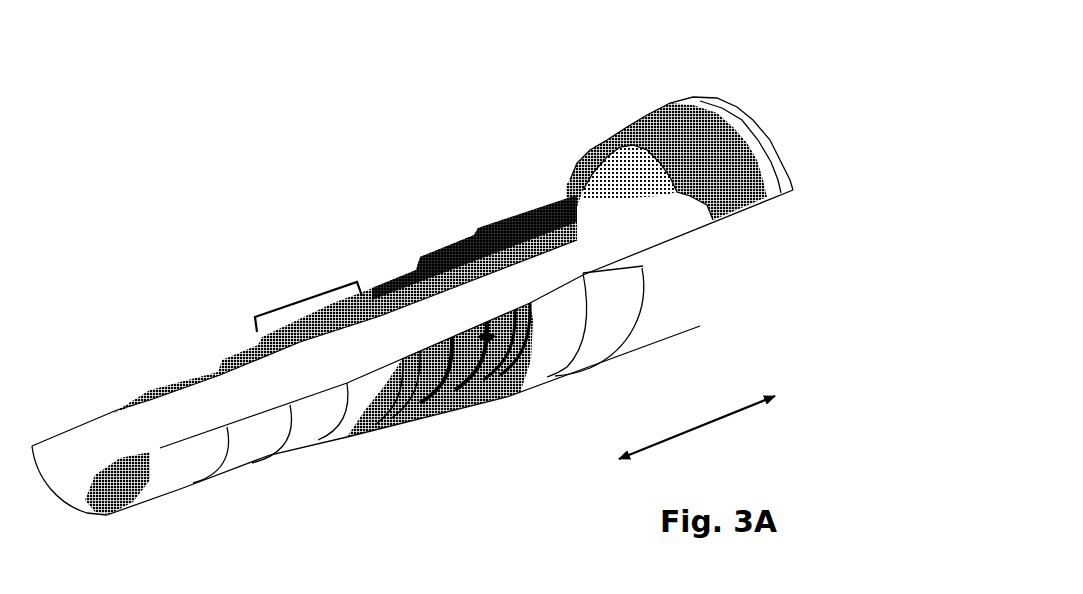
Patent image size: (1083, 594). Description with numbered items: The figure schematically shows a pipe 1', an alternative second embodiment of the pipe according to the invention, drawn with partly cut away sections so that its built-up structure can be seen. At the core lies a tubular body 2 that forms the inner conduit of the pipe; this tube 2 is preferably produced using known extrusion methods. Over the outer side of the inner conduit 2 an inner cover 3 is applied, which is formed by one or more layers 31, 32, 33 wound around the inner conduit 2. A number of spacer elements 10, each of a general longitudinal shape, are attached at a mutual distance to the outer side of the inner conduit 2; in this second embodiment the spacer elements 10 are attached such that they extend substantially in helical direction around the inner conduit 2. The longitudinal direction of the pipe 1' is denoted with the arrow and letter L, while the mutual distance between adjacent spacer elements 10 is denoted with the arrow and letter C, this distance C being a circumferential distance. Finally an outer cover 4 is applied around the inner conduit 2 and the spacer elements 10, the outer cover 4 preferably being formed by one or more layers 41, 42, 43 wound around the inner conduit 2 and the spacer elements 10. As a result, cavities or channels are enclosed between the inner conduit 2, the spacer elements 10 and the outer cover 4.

The pipe 1' is at (412, 244).
The tubular body 2 is at (169, 469).
The inner cover 3 is at (224, 355).
The outer cover 4 is at (398, 270).
The spacer element 10 is at (305, 297).
The layer 31 is at (238, 455).
The layer 32 is at (312, 425).
The layer 33 is at (365, 407).
The layer 41 is at (535, 375).
The layer 42 is at (605, 335).
The layer 43 is at (727, 292).
The mutual distance C is at (487, 342).
The longitudinal direction L is at (697, 427).